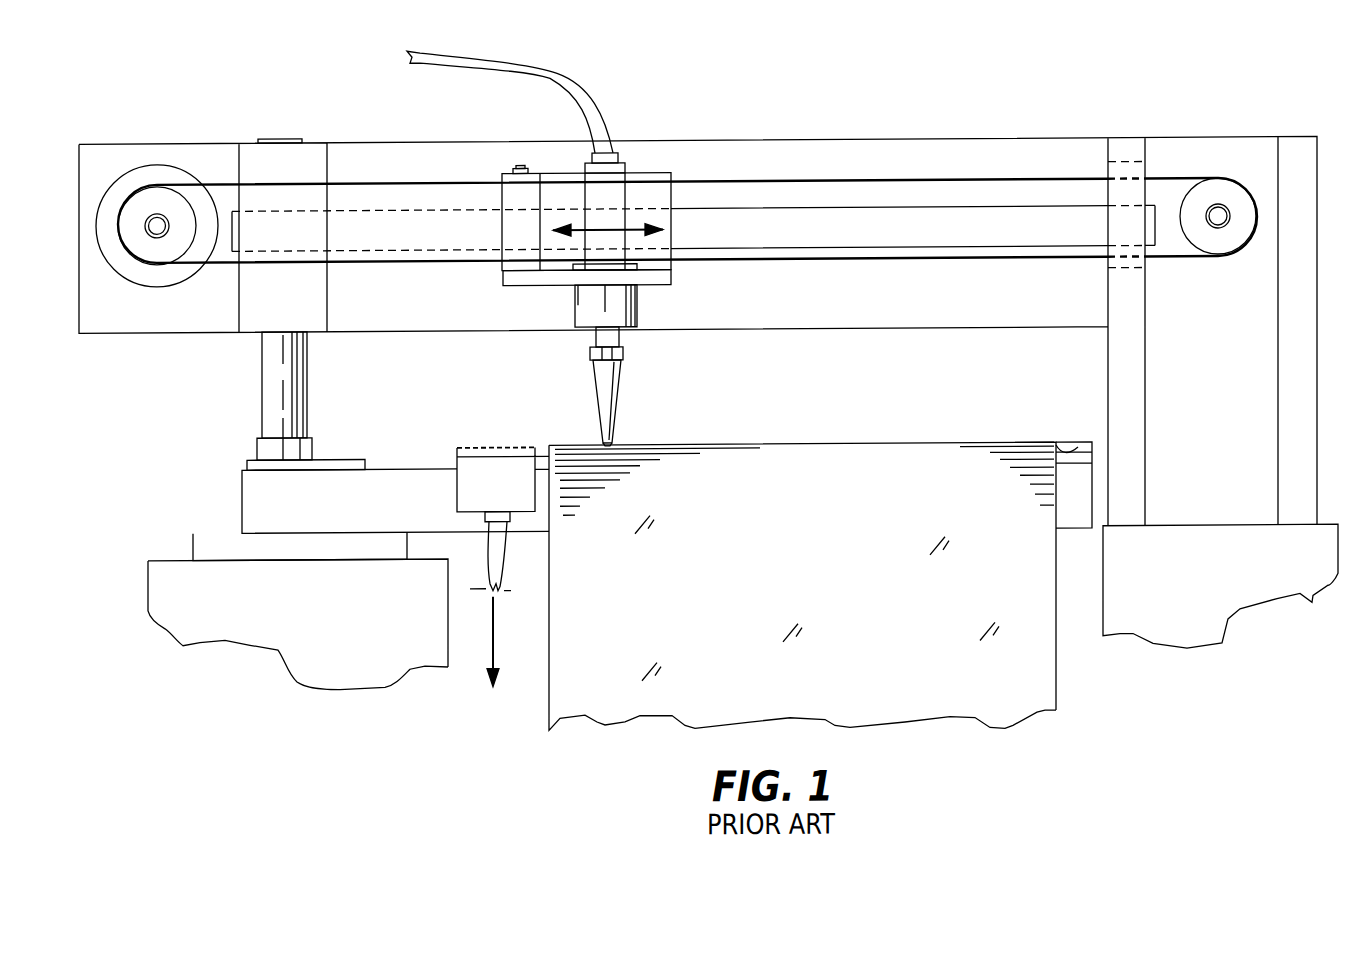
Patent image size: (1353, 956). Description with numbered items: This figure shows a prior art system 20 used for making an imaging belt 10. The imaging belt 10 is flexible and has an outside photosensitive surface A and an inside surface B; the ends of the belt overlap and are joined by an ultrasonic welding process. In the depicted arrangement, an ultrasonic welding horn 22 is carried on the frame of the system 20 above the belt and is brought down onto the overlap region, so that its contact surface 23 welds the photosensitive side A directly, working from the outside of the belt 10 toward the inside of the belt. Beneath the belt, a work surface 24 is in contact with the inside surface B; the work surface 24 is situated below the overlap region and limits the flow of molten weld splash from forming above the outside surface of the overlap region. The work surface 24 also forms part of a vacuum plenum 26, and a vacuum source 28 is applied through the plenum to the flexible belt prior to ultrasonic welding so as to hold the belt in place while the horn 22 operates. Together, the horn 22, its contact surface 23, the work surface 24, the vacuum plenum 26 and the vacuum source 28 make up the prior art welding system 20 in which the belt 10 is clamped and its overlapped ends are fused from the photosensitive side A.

The prior art system 20 is at (938, 99).
The ultrasonic welding horn 22 is at (618, 395).
The contact surface 23 is at (614, 442).
The work surface 24 is at (470, 447).
The vacuum plenum 26 is at (528, 446).
The vacuum source 28 is at (490, 622).
The imaging belt 10 is at (1038, 662).
The outside photosensitive surface A is at (1021, 436).
The inside surface B is at (1076, 444).